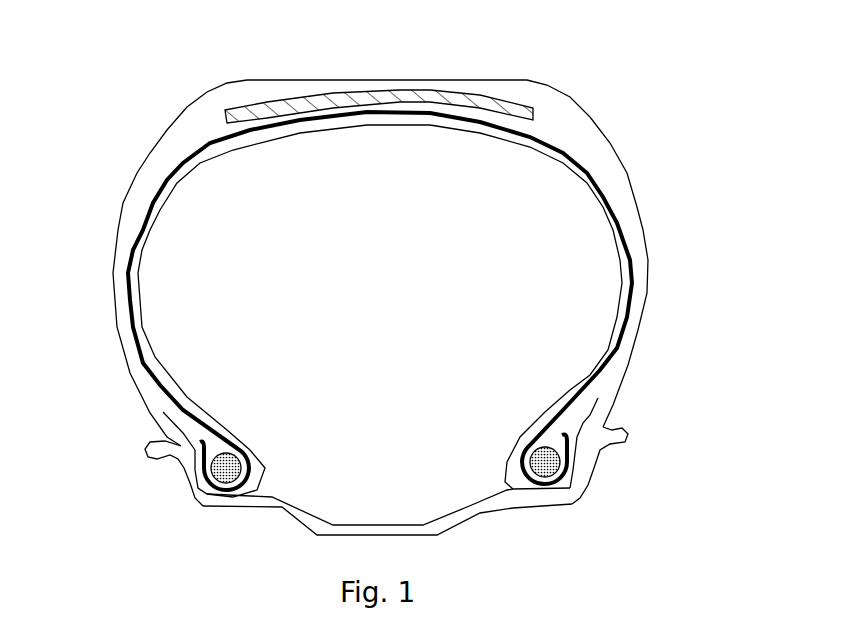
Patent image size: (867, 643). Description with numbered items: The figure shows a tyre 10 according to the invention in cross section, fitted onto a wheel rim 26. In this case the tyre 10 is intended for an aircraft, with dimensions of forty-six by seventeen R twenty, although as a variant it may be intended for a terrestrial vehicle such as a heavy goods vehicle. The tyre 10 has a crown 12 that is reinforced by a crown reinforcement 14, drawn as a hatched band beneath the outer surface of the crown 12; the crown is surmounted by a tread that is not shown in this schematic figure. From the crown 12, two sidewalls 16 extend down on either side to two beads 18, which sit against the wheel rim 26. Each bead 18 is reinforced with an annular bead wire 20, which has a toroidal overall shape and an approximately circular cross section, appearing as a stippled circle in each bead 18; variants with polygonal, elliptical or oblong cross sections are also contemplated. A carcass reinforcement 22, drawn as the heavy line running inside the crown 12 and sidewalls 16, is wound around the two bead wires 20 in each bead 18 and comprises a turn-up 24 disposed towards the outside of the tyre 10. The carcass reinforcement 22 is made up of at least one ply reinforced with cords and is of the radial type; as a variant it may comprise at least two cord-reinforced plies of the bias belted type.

The tyre 10 is at (400, 284).
The crown 12 is at (497, 90).
The crown reinforcement 14 is at (445, 80).
The sidewalls 16 is at (120, 278).
The beads 18 is at (228, 430).
The annular bead wire 20 is at (243, 462).
The carcass reinforcement 22 is at (150, 202).
The turn-up 24 is at (165, 418).
The wheel rim 26 is at (192, 475).